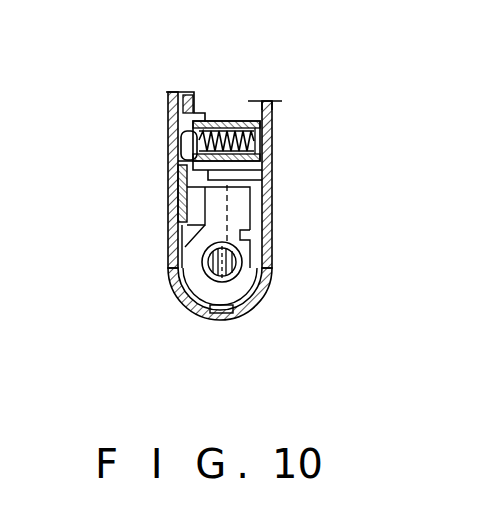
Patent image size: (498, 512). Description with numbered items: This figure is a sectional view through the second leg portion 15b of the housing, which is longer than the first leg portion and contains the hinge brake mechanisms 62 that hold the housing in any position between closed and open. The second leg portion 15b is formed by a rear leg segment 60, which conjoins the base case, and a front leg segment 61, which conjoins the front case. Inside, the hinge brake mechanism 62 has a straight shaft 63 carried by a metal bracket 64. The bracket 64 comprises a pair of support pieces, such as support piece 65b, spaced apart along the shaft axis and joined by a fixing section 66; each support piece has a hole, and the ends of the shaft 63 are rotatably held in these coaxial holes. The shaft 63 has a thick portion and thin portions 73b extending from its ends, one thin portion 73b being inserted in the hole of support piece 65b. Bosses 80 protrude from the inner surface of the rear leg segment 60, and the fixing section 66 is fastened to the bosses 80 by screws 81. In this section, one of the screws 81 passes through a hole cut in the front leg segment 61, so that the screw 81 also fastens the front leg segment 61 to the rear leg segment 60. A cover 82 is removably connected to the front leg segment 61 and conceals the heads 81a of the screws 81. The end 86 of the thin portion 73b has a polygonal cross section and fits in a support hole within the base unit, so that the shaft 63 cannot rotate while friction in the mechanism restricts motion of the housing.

The second leg portion 15b is at (272, 142).
The rear leg segment 60 is at (272, 197).
The front leg segment 61 is at (172, 227).
The hinge brake mechanism 62 is at (248, 238).
The shaft 63 is at (172, 275).
The bracket 64 is at (273, 280).
The support piece 65b is at (177, 242).
The fixing section 66 is at (210, 118).
The thin portion 73b is at (245, 313).
The boss 80 is at (240, 117).
The screw 81 is at (228, 118).
The screw head 81a is at (170, 138).
The cover 82 is at (172, 160).
The end of thin portion 86 is at (207, 312).